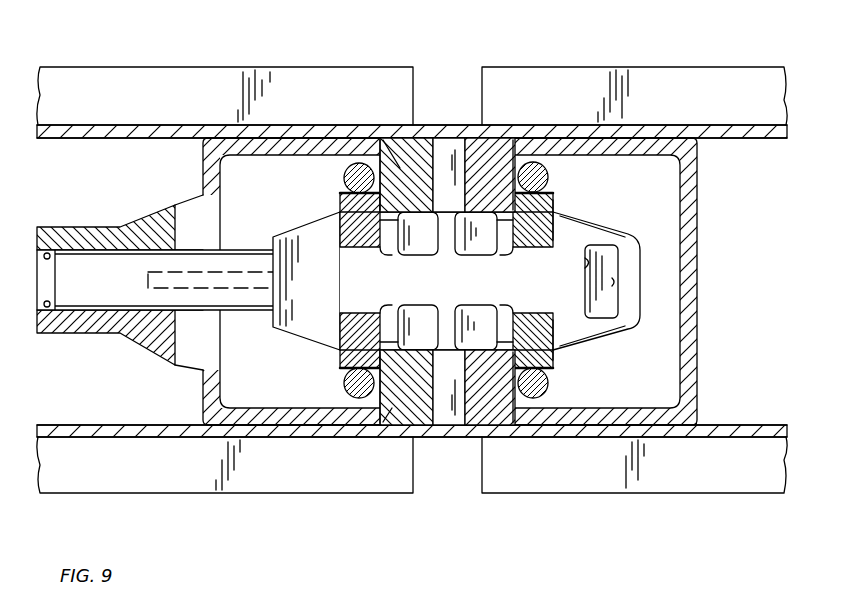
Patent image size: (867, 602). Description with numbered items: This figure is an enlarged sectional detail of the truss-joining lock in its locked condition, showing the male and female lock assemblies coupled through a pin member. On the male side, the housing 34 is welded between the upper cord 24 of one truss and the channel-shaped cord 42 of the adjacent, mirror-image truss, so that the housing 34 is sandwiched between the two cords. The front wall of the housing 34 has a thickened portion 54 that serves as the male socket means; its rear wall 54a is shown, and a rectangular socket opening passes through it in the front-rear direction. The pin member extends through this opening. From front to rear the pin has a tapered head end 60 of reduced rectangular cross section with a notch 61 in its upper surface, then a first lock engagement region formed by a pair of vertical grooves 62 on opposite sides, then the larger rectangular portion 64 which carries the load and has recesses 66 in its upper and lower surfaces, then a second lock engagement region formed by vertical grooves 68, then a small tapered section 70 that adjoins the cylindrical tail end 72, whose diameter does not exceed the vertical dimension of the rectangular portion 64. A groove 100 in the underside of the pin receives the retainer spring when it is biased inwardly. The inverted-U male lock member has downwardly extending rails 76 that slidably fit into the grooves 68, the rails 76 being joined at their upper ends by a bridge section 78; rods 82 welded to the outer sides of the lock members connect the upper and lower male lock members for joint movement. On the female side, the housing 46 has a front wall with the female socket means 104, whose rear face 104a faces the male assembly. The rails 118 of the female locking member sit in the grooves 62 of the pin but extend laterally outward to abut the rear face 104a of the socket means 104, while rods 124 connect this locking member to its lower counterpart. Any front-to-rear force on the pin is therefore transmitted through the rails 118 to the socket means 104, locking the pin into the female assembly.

The upper cord 24 is at (72, 493).
The housing 34 is at (212, 175).
The channel-shaped cord 42 is at (108, 125).
The housing 46 is at (694, 204).
The thickened portion 54 is at (418, 392).
The rear wall 54a is at (380, 193).
The head end 60 is at (613, 329).
The notch 61 is at (614, 286).
The grooves 62 is at (555, 222).
The larger rectangular portion 64 is at (460, 285).
The recesses 66 is at (403, 257).
The vertical grooves 68 is at (340, 196).
The tapered section 70 is at (291, 232).
The tail end 72 is at (83, 297).
The rails 76 is at (400, 165).
The bridge section 78 is at (388, 410).
The rods 82 is at (347, 176).
The groove 100 is at (205, 290).
The female socket means 104 is at (495, 400).
The rear face 104a is at (524, 150).
The rails 118 is at (548, 193).
The rods 124 is at (538, 165).